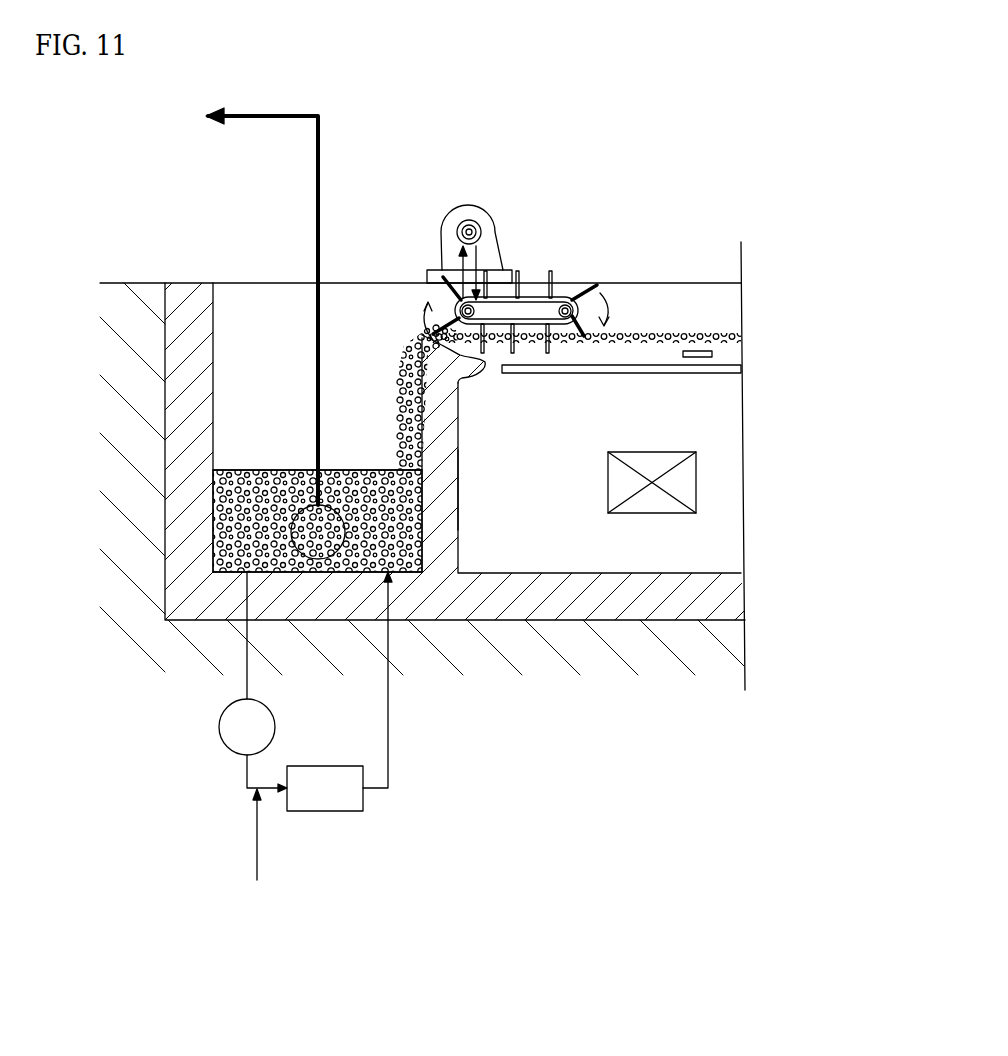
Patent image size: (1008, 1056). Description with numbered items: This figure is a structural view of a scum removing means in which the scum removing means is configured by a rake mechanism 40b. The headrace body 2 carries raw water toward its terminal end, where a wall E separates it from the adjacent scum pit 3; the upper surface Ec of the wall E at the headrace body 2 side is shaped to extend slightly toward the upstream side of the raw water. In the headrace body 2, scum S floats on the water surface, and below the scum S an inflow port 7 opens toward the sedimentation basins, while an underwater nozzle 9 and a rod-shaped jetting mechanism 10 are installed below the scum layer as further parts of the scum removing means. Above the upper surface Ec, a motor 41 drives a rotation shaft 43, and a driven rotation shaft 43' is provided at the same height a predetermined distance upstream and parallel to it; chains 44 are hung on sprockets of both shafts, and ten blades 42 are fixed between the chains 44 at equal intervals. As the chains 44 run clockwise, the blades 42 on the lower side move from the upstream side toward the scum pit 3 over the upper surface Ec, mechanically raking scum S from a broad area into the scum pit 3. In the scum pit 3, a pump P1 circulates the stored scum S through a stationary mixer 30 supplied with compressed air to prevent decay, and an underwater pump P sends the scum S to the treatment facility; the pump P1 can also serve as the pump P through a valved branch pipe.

The headrace body 2 is at (706, 264).
The scum pit 3 is at (285, 390).
The inflow port 7 is at (690, 482).
The underwater nozzle 9 is at (698, 358).
The jetting mechanism 10 is at (742, 370).
The stationary mixer 30 is at (345, 812).
The rake mechanism 40b is at (509, 296).
The motor 41 is at (467, 206).
The blade 42 is at (550, 271).
The rotation shaft 43 is at (420, 286).
The driven rotation shaft 43' is at (605, 284).
The chain 44 is at (516, 330).
The scum S is at (657, 333).
The wall E is at (458, 490).
The upper surface Ec is at (490, 340).
The underwater pump P is at (275, 333).
The pump P1 is at (251, 680).